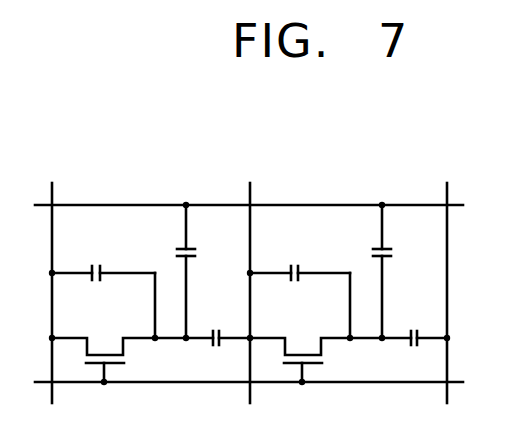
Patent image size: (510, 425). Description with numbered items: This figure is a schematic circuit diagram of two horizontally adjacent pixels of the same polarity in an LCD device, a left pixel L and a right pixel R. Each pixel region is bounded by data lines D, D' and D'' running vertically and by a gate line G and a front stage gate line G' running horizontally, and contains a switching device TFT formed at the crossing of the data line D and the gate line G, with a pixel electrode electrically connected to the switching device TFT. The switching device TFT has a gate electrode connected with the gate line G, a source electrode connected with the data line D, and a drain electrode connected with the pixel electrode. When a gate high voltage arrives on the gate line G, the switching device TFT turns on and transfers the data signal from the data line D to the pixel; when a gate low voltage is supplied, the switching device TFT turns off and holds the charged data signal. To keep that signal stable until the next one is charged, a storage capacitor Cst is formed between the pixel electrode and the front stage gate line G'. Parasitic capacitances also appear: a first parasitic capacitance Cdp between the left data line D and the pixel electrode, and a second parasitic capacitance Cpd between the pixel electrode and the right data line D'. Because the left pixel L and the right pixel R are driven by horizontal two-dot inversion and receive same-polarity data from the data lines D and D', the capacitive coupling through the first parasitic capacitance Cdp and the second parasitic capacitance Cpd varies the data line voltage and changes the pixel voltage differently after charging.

The data line D is at (53, 282).
The data line D' is at (252, 282).
The data line D'' is at (449, 282).
The gate line G is at (235, 383).
The front stage gate line G' is at (235, 206).
The left pixel L is at (149, 250).
The right pixel R is at (352, 250).
The first parasitic capacitance Cdp is at (201, 261).
The storage capacitor Cst is at (301, 271).
The second parasitic capacitance Cpd is at (301, 327).
The switching device TFT is at (201, 348).